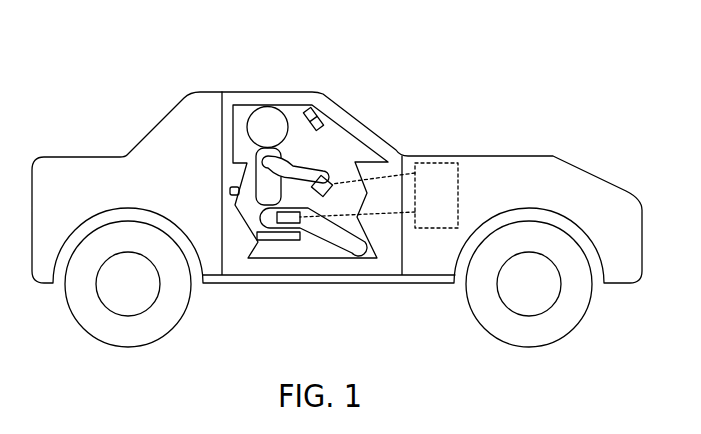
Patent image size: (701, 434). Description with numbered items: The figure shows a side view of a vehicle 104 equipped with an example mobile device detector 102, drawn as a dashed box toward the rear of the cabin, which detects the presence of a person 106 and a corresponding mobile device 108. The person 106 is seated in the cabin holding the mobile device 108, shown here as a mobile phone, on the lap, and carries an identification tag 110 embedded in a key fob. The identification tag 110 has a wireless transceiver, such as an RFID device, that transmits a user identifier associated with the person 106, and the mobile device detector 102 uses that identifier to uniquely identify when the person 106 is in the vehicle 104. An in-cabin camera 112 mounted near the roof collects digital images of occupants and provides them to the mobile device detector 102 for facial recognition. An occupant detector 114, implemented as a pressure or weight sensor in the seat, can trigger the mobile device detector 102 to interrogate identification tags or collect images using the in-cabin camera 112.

The mobile device detector 102 is at (458, 164).
The vehicle 104 is at (211, 92).
The person 106 is at (270, 118).
The mobile device 108 is at (278, 215).
The identification tag 110 is at (327, 179).
The in-cabin camera 112 is at (318, 112).
The occupant detector 114 is at (277, 240).